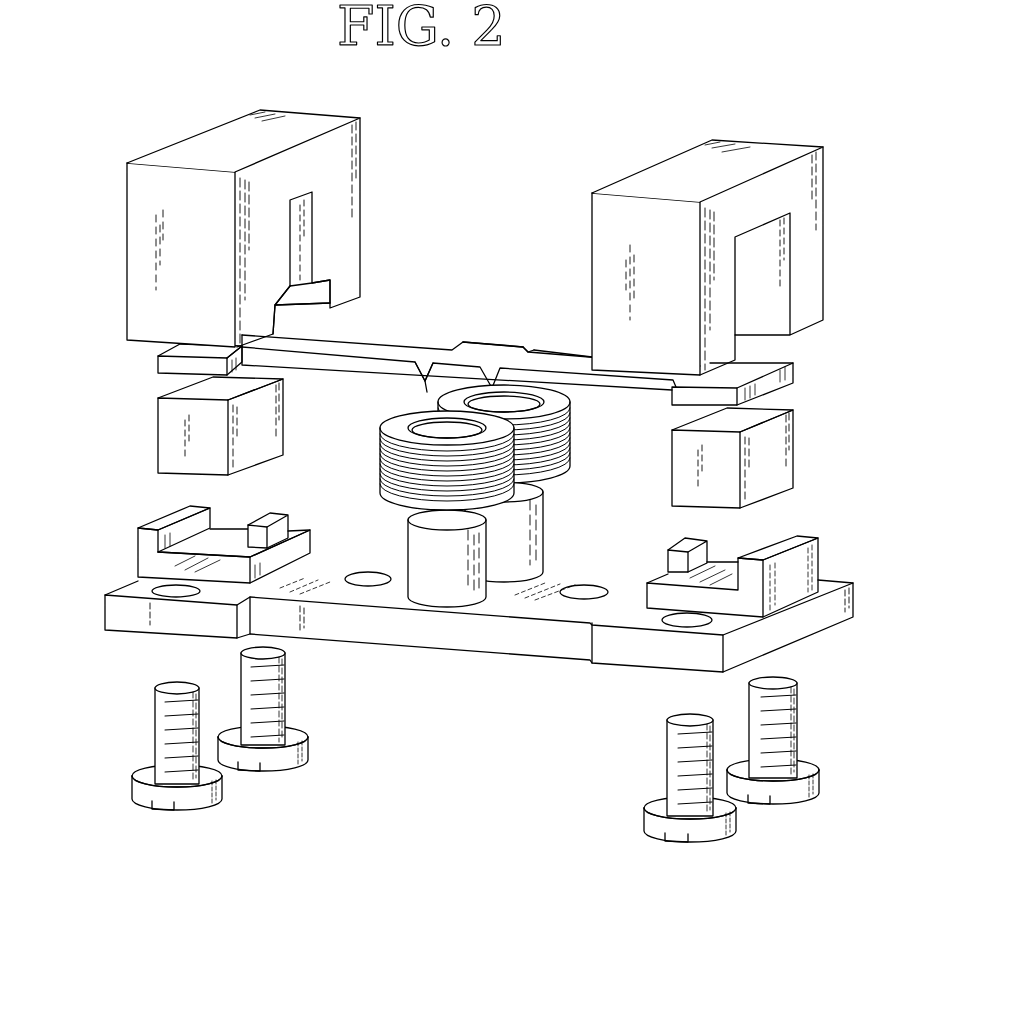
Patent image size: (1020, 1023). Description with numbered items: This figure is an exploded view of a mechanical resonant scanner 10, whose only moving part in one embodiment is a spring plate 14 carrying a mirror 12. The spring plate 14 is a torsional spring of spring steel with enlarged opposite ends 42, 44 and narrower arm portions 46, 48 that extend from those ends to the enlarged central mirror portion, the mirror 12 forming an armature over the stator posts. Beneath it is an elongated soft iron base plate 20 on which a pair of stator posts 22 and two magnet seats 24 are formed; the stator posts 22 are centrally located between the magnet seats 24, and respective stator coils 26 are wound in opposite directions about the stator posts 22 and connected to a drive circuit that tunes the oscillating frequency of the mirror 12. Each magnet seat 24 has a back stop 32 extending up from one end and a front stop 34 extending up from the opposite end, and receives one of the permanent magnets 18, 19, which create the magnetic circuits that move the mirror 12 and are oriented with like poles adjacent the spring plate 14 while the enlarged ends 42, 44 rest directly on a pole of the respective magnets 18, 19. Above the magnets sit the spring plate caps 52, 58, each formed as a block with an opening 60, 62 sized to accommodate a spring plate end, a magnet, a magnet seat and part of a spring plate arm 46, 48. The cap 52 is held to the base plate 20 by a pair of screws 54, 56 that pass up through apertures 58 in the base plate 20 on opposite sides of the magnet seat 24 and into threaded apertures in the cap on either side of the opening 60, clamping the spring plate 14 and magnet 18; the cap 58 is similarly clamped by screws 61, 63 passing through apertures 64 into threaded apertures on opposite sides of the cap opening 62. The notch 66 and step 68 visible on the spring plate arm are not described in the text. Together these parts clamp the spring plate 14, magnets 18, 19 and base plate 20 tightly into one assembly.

The mechanical resonant scanner 10 is at (790, 90).
The mirror 12 is at (484, 352).
The spring plate 14 is at (349, 385).
The permanent magnet 18 is at (794, 452).
The permanent magnet 19 is at (160, 429).
The base plate 20 is at (350, 647).
The stator post 22 is at (456, 604).
The magnet seat 24 is at (150, 566).
The stator coil 26 is at (382, 468).
The back stop 32 is at (145, 553).
The front stop 34 is at (262, 522).
The enlarged end of spring plate 42 is at (790, 385).
The enlarged end of spring plate 44 is at (157, 365).
The arm portion of spring plate 46 is at (562, 356).
The arm portion of spring plate 48 is at (378, 353).
The spring plate cap 52 is at (776, 150).
The screw 54 is at (725, 837).
The screw 56 is at (812, 803).
The spring plate cap 58 is at (131, 170).
The cap opening 60 is at (783, 348).
The screw 61 is at (208, 812).
The cap opening 62 is at (302, 316).
The screw 63 is at (283, 774).
The aperture 64 is at (172, 594).
The notch 66 is at (413, 381).
The step 68 is at (522, 350).